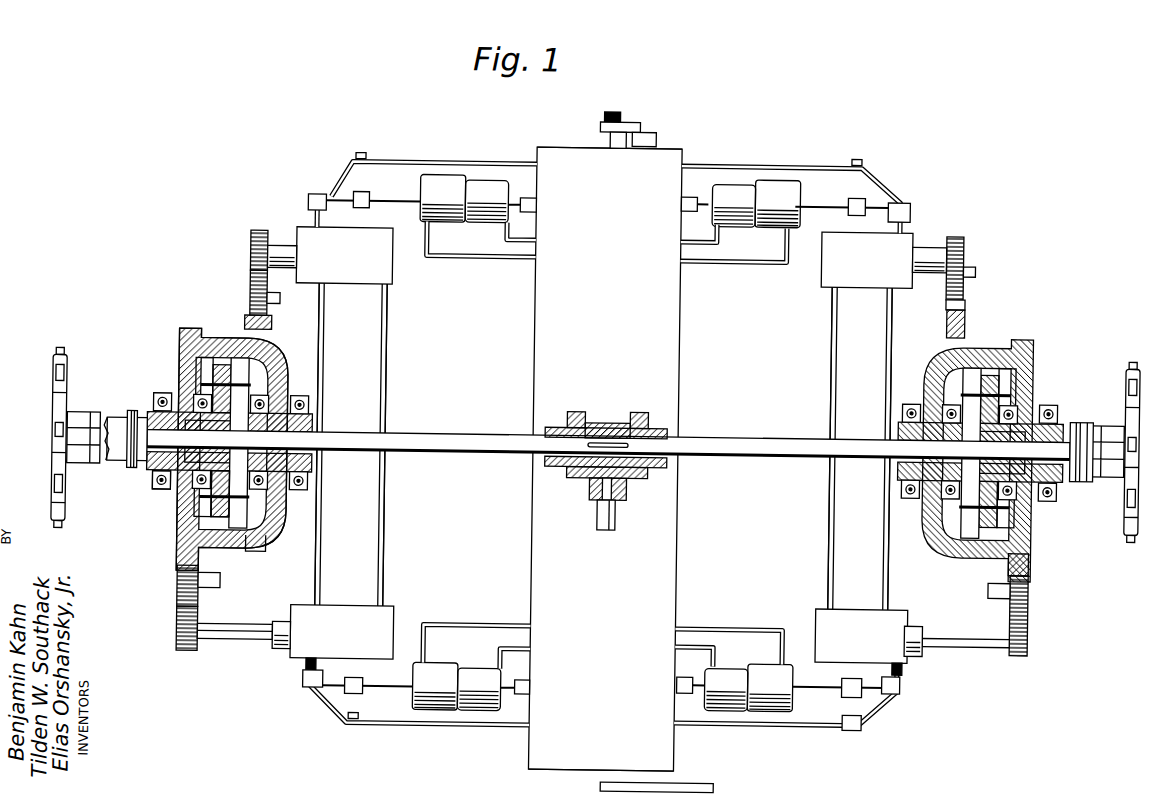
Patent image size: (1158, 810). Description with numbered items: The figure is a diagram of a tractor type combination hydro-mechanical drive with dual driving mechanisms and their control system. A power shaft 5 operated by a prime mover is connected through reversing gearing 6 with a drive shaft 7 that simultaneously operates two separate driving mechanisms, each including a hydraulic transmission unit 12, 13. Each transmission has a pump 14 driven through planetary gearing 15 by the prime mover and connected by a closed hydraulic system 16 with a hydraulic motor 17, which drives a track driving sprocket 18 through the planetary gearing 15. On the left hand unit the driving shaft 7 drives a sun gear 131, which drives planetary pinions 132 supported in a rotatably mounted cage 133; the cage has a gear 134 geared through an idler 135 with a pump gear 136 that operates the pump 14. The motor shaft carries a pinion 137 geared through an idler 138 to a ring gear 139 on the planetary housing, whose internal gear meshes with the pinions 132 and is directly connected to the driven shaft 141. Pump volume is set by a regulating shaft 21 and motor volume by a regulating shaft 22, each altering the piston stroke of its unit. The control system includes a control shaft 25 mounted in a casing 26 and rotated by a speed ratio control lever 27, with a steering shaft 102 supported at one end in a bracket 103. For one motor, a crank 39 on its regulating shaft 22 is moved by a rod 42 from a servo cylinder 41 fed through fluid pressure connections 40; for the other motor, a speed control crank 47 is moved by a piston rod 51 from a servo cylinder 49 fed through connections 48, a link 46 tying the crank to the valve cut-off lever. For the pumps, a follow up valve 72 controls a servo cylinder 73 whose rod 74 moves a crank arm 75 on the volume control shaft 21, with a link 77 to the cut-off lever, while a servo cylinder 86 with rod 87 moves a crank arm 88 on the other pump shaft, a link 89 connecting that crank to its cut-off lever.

The power shaft 5 is at (598, 524).
The reversing gearing 6 is at (607, 425).
The drive shaft 7 is at (460, 436).
The hydraulic transmission unit 12 is at (333, 398).
The hydraulic transmission unit 13 is at (852, 395).
The pump 14 is at (604, 258).
The planetary gearing 15 is at (306, 368).
The closed hydraulic system 16 is at (380, 324).
The hydraulic motor 17 is at (340, 609).
The track driving sprocket 18 is at (50, 400).
The regulating shaft 21 is at (305, 220).
The regulating shaft 22 is at (308, 669).
The control shaft 25 is at (588, 775).
The casing 26 is at (679, 604).
The speed ratio control lever 27 is at (690, 786).
The crank 39 is at (880, 705).
The fluid pressure connections 40 is at (758, 638).
The servo cylinder 41 is at (734, 687).
The rod 42 is at (822, 688).
The link 46 is at (430, 729).
The speed control crank 47 is at (312, 692).
The fluid pressure connections 48 is at (466, 631).
The servo cylinder 49 is at (471, 685).
The piston rod 51 is at (398, 688).
The follow up valve 72 is at (740, 257).
The servo cylinder 73 is at (741, 203).
The rod 74 is at (826, 200).
The crank arm 75 is at (866, 200).
The link 77 is at (800, 163).
The servo cylinder 86 is at (478, 215).
The rod 87 is at (392, 203).
The crank arm 88 is at (355, 211).
The link 89 is at (446, 163).
The shaft 102 is at (604, 141).
The bracket 103 is at (632, 130).
The sun gear 131 is at (165, 495).
The planetary pinions 132 is at (232, 540).
The cage 133 is at (245, 490).
The gear 134 is at (245, 327).
The idler 135 is at (248, 289).
The pump gear 136 is at (248, 245).
The pinion 137 is at (179, 646).
The idler 138 is at (179, 609).
The ring gear 139 is at (178, 537).
The driven shaft 141 is at (112, 422).